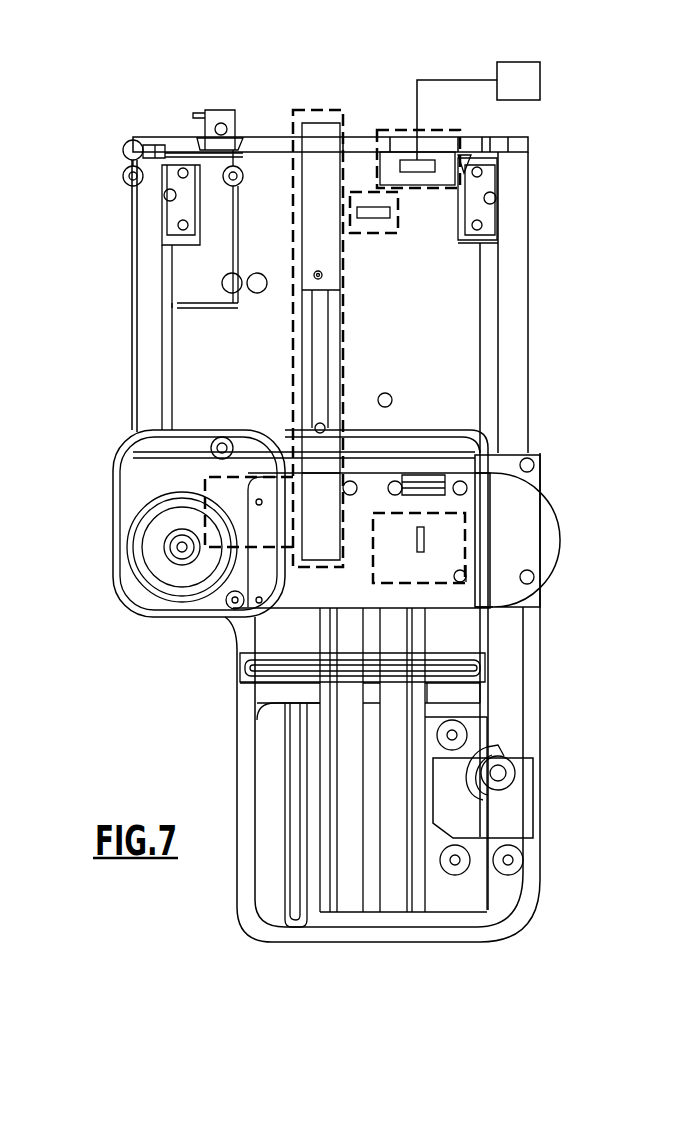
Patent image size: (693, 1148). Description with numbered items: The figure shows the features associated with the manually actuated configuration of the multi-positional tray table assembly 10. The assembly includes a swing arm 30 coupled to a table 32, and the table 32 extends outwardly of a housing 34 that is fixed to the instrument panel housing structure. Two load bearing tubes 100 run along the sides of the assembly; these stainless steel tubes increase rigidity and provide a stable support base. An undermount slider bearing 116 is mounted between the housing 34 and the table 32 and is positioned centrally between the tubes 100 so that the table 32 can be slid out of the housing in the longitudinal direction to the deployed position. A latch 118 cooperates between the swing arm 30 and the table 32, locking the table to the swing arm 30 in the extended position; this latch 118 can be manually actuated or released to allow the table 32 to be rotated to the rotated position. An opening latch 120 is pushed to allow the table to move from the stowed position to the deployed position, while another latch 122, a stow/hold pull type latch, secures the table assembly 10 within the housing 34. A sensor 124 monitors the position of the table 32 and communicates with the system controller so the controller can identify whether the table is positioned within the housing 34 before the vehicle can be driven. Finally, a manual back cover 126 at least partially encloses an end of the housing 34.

The multi-positional tray table assembly 10 is at (602, 388).
The swing arm 30 is at (130, 512).
The table 32 is at (537, 737).
The housing 34 is at (197, 328).
The load bearing tubes 100 is at (142, 257).
The undermount slider bearing 116 is at (293, 325).
The latch 118 is at (466, 525).
The opening latch 120 is at (262, 550).
The latch 122 is at (375, 222).
The sensor 124 is at (460, 172).
The manual back cover 126 is at (476, 137).